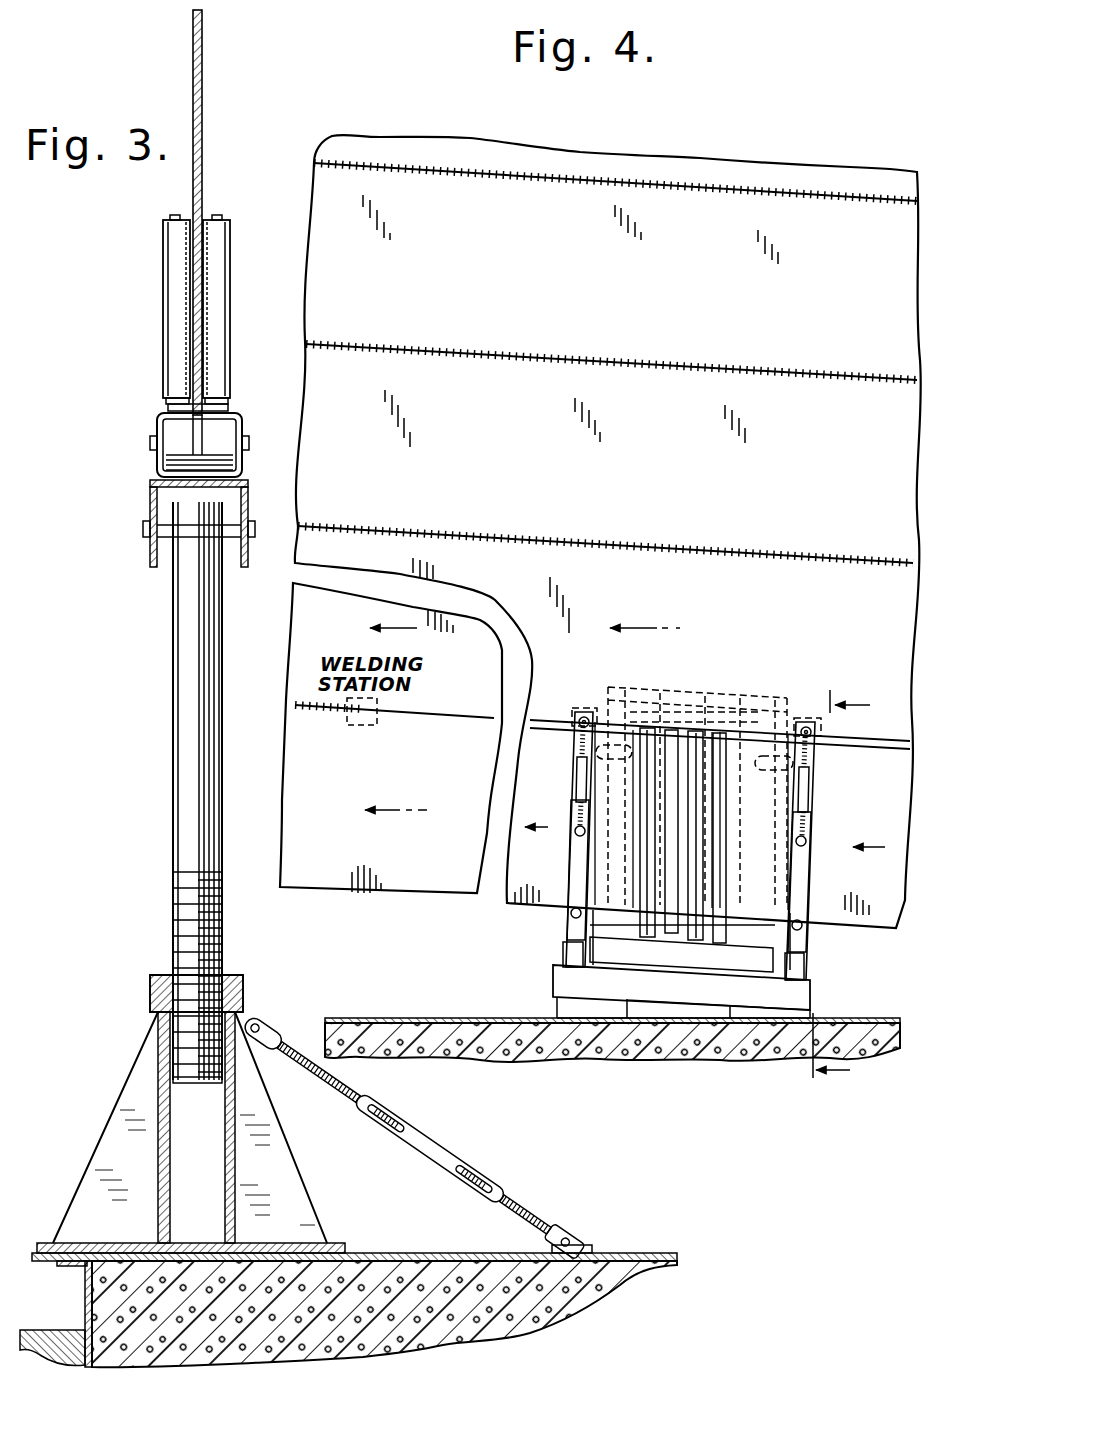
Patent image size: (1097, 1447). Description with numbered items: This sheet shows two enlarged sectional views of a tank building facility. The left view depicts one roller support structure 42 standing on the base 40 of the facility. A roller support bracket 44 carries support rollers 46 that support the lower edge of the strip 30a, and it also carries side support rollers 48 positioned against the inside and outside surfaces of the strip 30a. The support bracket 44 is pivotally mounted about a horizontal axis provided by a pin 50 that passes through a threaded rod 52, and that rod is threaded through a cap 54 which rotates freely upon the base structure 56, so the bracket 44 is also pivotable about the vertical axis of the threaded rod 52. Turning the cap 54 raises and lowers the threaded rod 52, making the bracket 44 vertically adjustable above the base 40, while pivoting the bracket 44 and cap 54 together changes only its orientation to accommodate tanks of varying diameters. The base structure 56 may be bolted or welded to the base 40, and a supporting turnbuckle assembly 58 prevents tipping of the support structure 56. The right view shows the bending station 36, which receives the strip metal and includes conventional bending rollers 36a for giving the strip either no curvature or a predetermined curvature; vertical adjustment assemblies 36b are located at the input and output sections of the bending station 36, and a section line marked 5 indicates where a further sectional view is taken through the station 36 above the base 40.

In FIG. 3, the strip 30a is at (200, 138).
In FIG. 4, the station 36 is at (722, 678).
In FIG. 4, the bending rollers 36a is at (686, 712).
In FIG. 4, the vertical adjustment assemblies 36b is at (568, 765).
In FIG. 3, the base 40 is at (602, 1297).
In FIG. 4, the base 40 is at (712, 1062).
In FIG. 3, the roller support structure 42 is at (165, 688).
In FIG. 3, the roller support bracket 44 is at (150, 503).
In FIG. 3, the support rollers 46 is at (222, 428).
In FIG. 3, the side support rollers 48 is at (175, 302).
In FIG. 3, the pin 50 is at (236, 558).
In FIG. 3, the threaded rod 52 is at (212, 707).
In FIG. 3, the cap 54 is at (243, 992).
In FIG. 3, the base structure 56 is at (158, 1063).
In FIG. 3, the turnbuckle assembly 58 is at (418, 1128).
In FIG. 4, the section line 5 is at (841, 888).